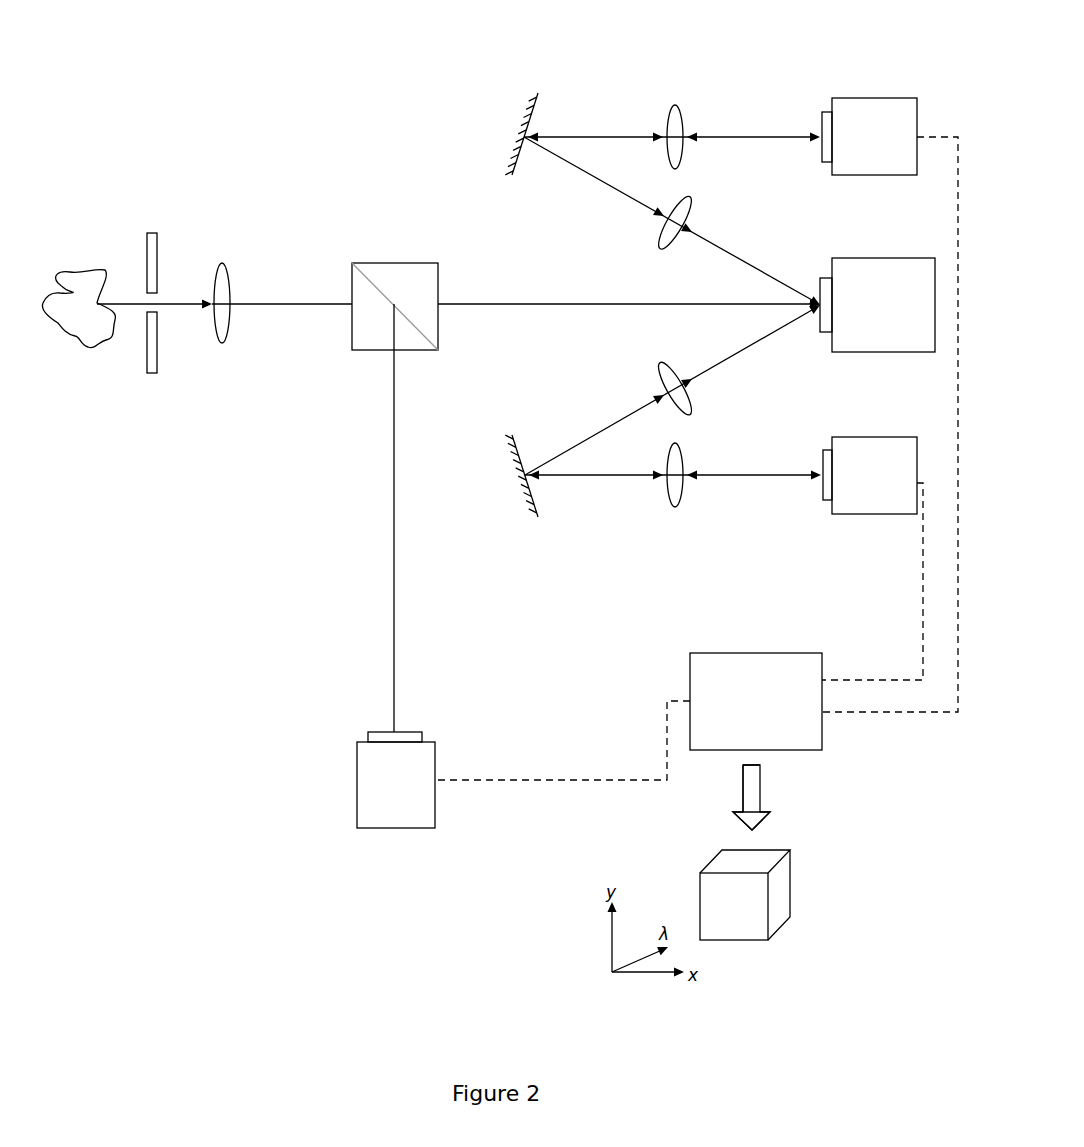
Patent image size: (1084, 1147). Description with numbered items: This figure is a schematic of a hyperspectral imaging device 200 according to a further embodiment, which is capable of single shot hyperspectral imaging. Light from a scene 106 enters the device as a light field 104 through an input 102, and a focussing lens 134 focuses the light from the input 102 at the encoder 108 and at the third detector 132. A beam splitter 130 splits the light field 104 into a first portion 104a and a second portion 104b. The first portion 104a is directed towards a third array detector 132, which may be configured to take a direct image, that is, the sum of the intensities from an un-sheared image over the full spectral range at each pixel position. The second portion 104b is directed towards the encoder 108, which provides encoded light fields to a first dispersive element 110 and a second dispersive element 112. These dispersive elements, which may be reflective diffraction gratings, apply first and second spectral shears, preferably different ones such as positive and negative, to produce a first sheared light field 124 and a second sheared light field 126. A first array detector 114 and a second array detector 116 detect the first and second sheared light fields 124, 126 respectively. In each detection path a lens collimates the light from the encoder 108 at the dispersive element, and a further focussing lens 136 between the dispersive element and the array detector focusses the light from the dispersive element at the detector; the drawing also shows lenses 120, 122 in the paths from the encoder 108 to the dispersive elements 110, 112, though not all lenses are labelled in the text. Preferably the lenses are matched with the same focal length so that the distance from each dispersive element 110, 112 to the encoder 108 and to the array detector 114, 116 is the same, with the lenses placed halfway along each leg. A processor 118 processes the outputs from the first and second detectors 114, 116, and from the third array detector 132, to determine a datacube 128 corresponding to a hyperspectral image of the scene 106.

The hyperspectral imaging device 200 is at (326, 88).
The input 102 is at (152, 232).
The light field 104 is at (178, 305).
The first portion 104a is at (393, 538).
The second portion 104b is at (528, 303).
The scene 106 is at (80, 272).
The encoder 108 is at (880, 257).
The first dispersive element 110 is at (533, 92).
The second dispersive element 112 is at (532, 518).
The first array detector 114 is at (875, 97).
The second array detector 116 is at (872, 436).
The processor 118 is at (720, 652).
The first relay lens 120 is at (735, 252).
The second relay lens 122 is at (700, 375).
The first sheared light field 124 is at (638, 136).
The second sheared light field 126 is at (630, 476).
The datacube 128 is at (742, 941).
The beam splitter 130 is at (395, 262).
The third array detector 132 is at (392, 829).
The focussing lens 134 is at (223, 343).
The focussing lens 136 is at (677, 106).